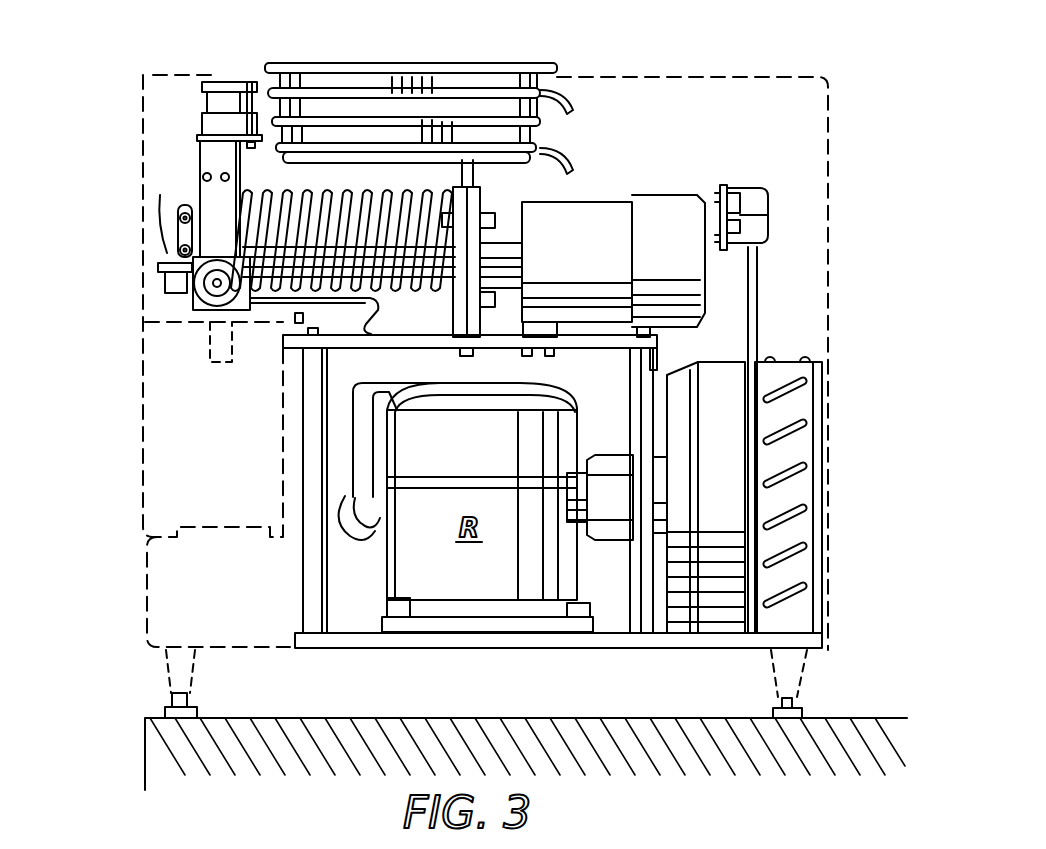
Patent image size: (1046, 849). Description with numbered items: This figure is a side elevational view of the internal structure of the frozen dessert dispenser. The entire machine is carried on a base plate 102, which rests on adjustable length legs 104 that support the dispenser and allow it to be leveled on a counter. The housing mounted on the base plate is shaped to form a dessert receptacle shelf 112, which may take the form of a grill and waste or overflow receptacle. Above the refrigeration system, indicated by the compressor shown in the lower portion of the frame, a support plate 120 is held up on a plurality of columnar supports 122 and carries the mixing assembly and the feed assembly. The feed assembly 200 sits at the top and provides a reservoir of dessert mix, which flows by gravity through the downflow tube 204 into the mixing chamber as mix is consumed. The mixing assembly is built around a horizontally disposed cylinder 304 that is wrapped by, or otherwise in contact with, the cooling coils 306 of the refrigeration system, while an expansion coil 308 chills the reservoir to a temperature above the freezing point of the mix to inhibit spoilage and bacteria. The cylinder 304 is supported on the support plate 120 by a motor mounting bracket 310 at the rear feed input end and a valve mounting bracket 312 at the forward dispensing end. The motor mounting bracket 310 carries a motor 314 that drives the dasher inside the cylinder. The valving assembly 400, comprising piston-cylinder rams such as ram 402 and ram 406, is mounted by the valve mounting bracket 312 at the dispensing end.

The base plate 102 is at (817, 642).
The adjustable length legs 104 is at (797, 680).
The dessert receptacle shelf 112 is at (232, 525).
The support plate 120 is at (283, 347).
The columnar supports 122 is at (317, 445).
The feed assembly 200 is at (420, 63).
The downflow tube 204 is at (473, 172).
The cylinder 304 is at (320, 193).
The cooling coils 306 is at (357, 347).
The expansion coil 308 is at (577, 114).
The motor mounting bracket 310 is at (467, 258).
The valve mounting bracket 312 is at (212, 197).
The motor 314 is at (620, 220).
The valving assembly 400 is at (172, 200).
The ram 402 is at (203, 103).
The ram 406 is at (212, 293).